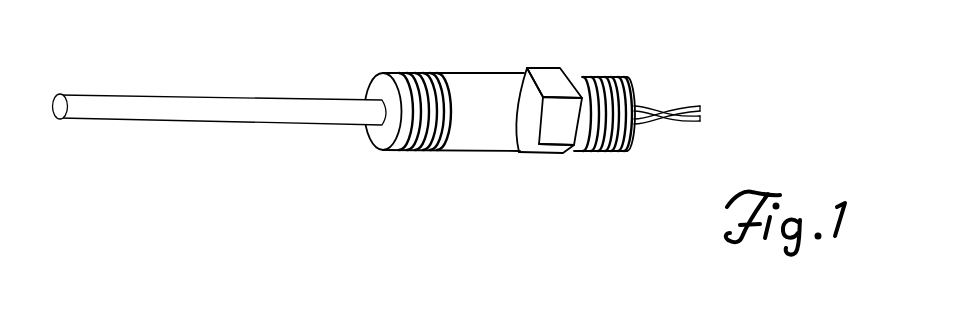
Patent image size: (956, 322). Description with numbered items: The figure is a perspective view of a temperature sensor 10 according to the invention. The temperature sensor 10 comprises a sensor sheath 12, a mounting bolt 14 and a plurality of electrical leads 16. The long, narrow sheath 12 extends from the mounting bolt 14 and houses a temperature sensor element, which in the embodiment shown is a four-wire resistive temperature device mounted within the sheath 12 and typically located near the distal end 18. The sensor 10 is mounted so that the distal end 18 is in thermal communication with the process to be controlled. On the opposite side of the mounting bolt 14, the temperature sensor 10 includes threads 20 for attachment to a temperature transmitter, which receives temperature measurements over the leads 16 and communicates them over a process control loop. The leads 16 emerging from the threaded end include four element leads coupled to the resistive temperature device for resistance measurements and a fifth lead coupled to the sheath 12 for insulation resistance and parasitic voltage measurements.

The temperature sensor 10 is at (400, 108).
The sensor sheath 12 is at (176, 95).
The mounting bolt 14 is at (478, 72).
The electrical leads 16 is at (687, 107).
The distal end 18 is at (64, 118).
The threads 20 is at (597, 152).